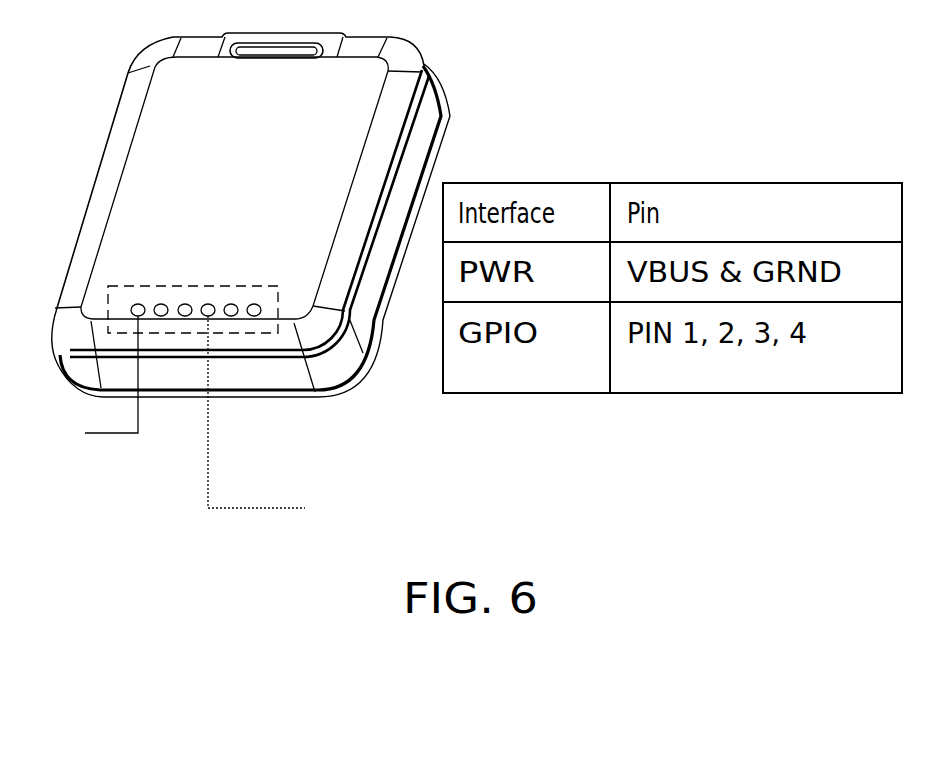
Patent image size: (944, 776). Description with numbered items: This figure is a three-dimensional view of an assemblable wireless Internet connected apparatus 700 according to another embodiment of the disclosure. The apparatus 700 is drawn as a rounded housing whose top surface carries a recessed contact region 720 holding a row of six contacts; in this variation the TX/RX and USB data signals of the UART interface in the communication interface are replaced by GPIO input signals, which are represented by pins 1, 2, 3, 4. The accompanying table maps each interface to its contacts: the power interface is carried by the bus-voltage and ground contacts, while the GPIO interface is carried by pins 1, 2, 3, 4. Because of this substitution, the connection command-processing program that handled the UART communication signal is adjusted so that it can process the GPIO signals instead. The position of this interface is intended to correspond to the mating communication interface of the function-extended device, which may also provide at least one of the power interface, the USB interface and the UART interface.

The assemblable wireless Internet connected apparatus 700 is at (415, 137).
The pin interface 720 is at (197, 356).
The pin 1 is at (161, 316).
The pin 2 is at (185, 316).
The pin 3 is at (254, 316).
The pin 4 is at (231, 316).